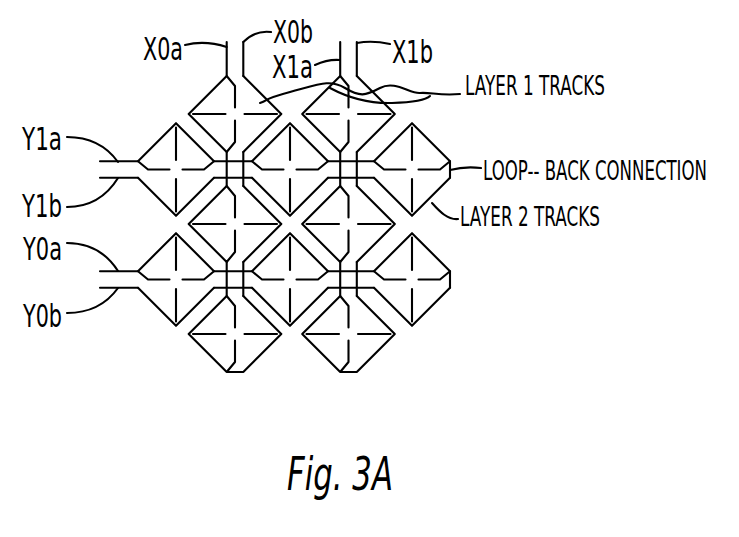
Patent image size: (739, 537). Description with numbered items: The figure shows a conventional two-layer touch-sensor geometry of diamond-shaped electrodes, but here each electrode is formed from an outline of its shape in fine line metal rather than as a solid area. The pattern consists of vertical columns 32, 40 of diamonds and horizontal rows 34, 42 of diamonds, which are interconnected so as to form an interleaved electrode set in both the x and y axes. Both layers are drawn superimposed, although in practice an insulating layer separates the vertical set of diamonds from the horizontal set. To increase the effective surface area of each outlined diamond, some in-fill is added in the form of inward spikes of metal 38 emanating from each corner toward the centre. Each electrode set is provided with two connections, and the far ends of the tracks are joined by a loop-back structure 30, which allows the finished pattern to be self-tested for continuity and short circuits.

The loop-back structure 30 is at (397, 262).
The vertical column of diamonds 32 is at (207, 96).
The horizontal row of diamonds 34 is at (155, 255).
The inward spikes of metal 38 is at (382, 337).
The vertical column of diamonds 40 is at (396, 112).
The horizontal row of diamonds 42 is at (155, 145).